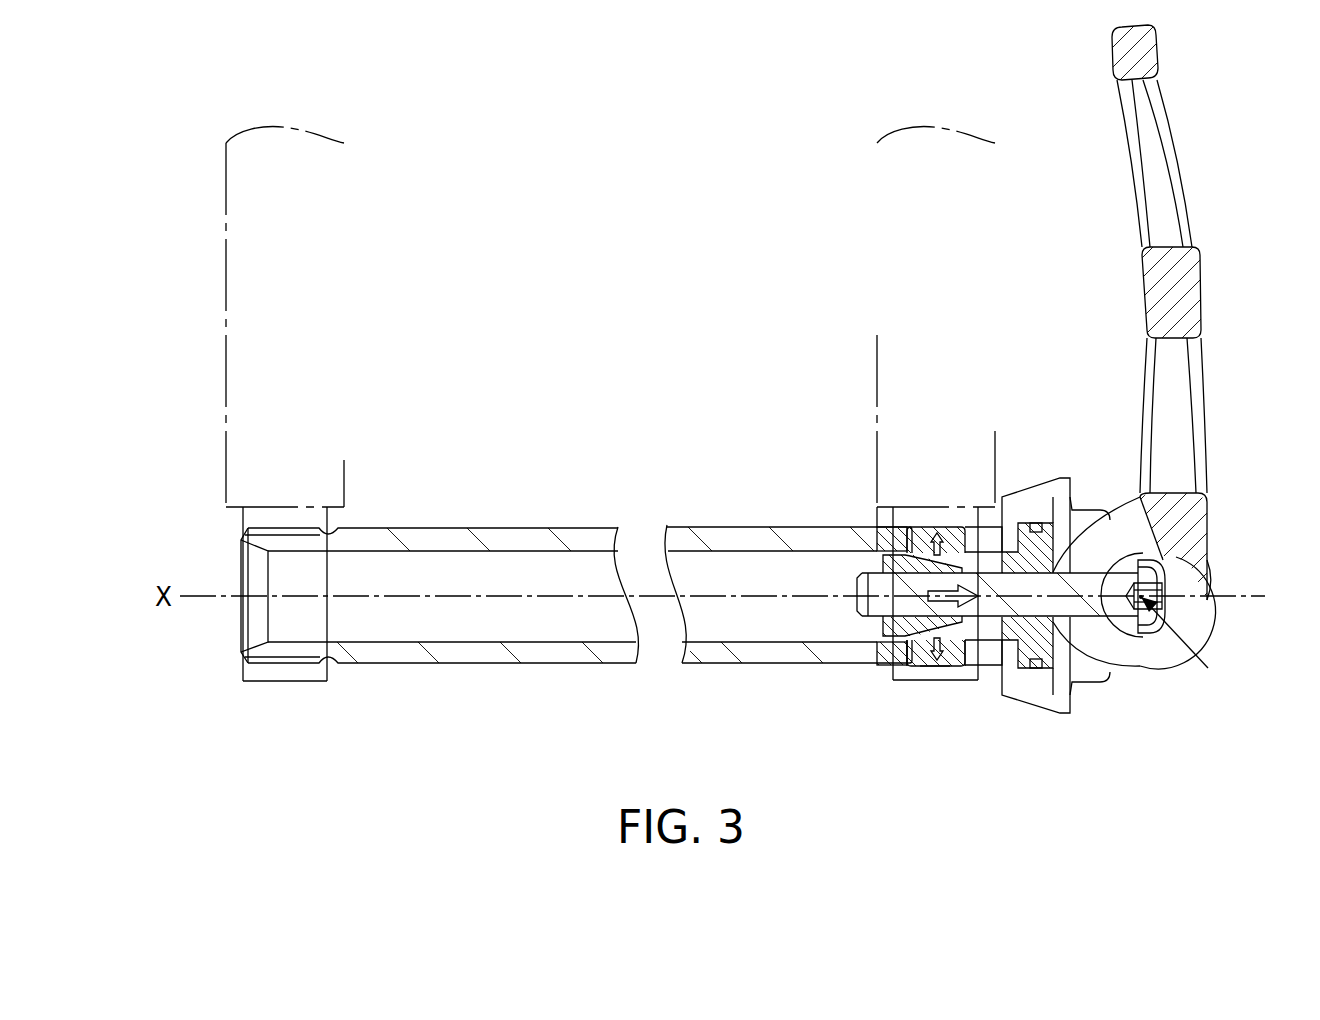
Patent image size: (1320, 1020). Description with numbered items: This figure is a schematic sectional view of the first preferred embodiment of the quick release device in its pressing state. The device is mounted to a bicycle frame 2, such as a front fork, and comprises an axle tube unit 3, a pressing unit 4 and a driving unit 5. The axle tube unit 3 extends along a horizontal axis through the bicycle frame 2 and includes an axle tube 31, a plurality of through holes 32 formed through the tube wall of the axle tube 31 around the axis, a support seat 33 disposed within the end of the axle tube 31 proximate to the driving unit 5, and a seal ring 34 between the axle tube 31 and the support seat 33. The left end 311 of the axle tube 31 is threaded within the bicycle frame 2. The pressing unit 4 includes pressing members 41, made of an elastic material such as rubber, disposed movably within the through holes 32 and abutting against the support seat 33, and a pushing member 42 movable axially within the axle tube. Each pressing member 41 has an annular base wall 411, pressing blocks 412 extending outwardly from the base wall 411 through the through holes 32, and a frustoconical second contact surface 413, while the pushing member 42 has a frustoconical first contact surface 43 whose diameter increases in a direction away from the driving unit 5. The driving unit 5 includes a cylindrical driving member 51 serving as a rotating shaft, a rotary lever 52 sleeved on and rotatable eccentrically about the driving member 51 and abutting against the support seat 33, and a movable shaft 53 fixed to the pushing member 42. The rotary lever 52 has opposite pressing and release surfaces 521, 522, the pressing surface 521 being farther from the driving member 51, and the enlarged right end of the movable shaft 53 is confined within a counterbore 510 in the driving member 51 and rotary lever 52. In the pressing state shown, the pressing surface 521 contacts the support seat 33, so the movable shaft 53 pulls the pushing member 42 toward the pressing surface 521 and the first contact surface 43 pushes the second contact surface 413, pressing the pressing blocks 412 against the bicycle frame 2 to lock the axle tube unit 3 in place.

The bicycle frame 2 is at (182, 190).
The axle tube unit 3 is at (516, 514).
The axle tube 31 is at (487, 652).
The left end of the axle tube 311 is at (284, 664).
The through holes 32 is at (897, 553).
The support seat 33 is at (1028, 645).
The seal ring 34 is at (1039, 668).
The pressing unit 4 is at (860, 638).
The pushing member 42 is at (997, 594).
The pressing members 41 is at (942, 533).
The annular base wall 411 is at (958, 660).
The pressing blocks 412 is at (930, 660).
The second contact surface 413 is at (903, 652).
The first contact surface 43 is at (893, 563).
The driving unit 5 is at (1218, 618).
The driving member 51 is at (1123, 630).
The counterbore 510 is at (1147, 622).
The rotary lever 52 is at (1187, 528).
The pressing surface 521 is at (1065, 560).
The release surface 522 is at (1207, 583).
The movable shaft 53 is at (1080, 605).